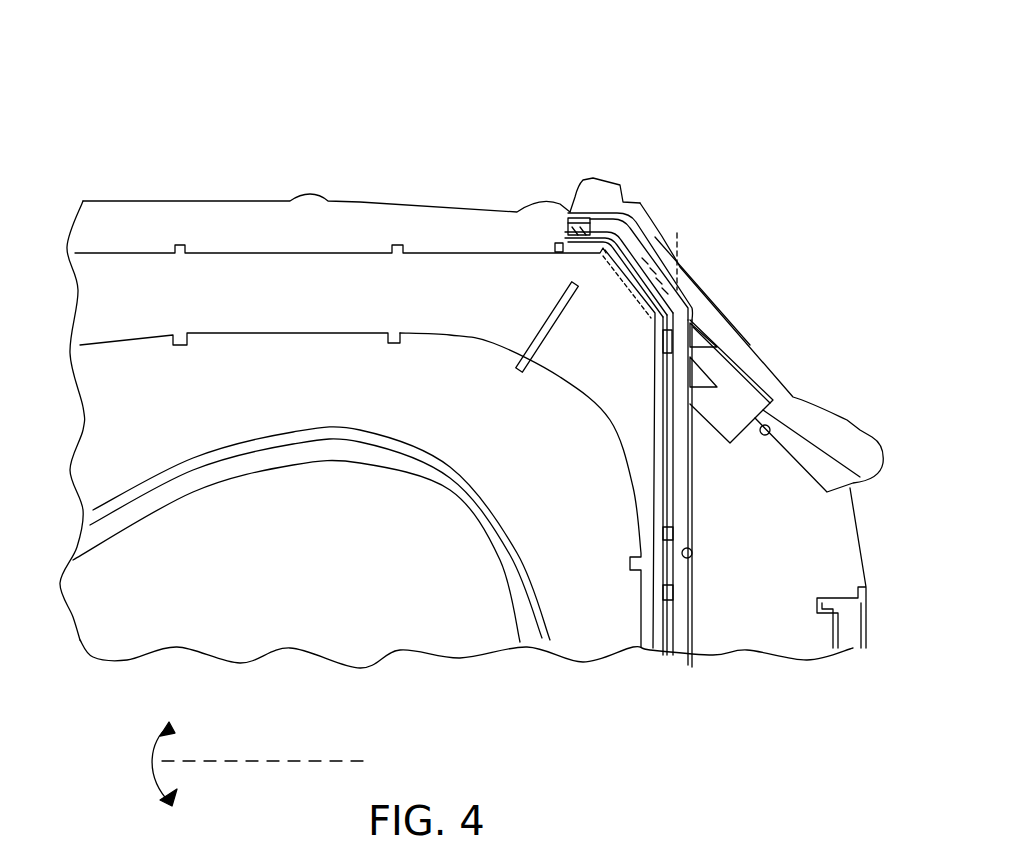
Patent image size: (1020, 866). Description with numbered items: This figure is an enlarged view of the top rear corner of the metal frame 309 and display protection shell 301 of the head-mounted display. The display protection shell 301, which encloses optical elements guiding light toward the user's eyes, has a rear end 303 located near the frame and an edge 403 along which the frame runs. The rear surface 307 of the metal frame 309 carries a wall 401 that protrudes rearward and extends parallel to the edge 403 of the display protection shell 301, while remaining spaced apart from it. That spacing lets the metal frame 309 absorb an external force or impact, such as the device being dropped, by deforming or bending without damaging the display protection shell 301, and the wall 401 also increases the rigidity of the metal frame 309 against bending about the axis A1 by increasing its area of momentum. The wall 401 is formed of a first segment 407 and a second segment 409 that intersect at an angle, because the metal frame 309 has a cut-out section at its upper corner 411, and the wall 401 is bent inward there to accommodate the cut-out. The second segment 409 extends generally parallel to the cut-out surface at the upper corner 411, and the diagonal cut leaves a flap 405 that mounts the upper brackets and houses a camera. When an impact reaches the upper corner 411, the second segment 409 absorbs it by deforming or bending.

The metal frame 309 is at (432, 205).
The rear end 303 is at (115, 568).
The display protection shell 301 is at (553, 537).
The rear surface 307 is at (808, 542).
The flap 405 is at (650, 213).
The second segment 409 is at (630, 247).
The first segment 407 is at (680, 422).
The wall 401 is at (683, 507).
The edge 403 is at (660, 573).
The upper corner 411 is at (699, 173).
The axis A1 is at (325, 753).